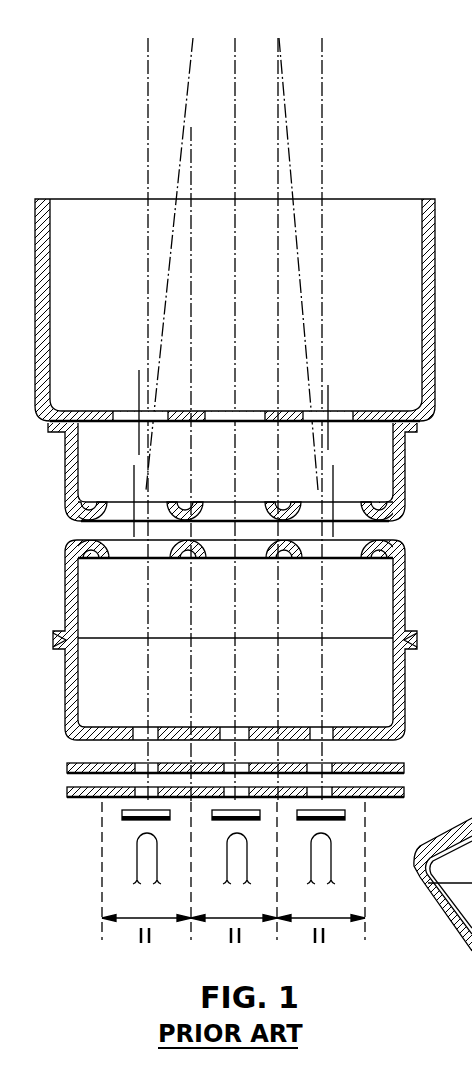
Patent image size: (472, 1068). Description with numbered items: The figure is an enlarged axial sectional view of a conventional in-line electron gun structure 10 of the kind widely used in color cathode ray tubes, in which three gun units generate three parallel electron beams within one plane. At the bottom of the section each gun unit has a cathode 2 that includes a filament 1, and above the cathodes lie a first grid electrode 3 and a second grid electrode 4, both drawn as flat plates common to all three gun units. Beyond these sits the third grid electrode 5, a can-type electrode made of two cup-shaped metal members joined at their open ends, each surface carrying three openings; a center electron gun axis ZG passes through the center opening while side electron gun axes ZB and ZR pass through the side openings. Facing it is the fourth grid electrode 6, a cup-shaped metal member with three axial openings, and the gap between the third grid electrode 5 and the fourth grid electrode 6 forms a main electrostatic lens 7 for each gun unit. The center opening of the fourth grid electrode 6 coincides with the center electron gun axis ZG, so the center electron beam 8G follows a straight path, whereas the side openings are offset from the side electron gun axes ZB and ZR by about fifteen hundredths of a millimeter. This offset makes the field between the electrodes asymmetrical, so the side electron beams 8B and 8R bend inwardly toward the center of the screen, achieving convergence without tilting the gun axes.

The filament 1 is at (137, 862).
The cathode 2 is at (122, 821).
The first grid electrode 3 is at (68, 795).
The second grid electrode 4 is at (68, 763).
The third grid electrode 5 is at (240, 640).
The fourth grid electrode 6 is at (237, 472).
The main electrostatic lens 7 is at (372, 533).
The side electron beam 8B is at (190, 50).
The center electron beam 8G is at (236, 50).
The side electron beam 8R is at (281, 56).
The electron gun structure 10 is at (82, 198).
The side electron gun axis ZB is at (147, 91).
The center electron gun axis ZG is at (236, 118).
The side electron gun axis ZR is at (323, 100).